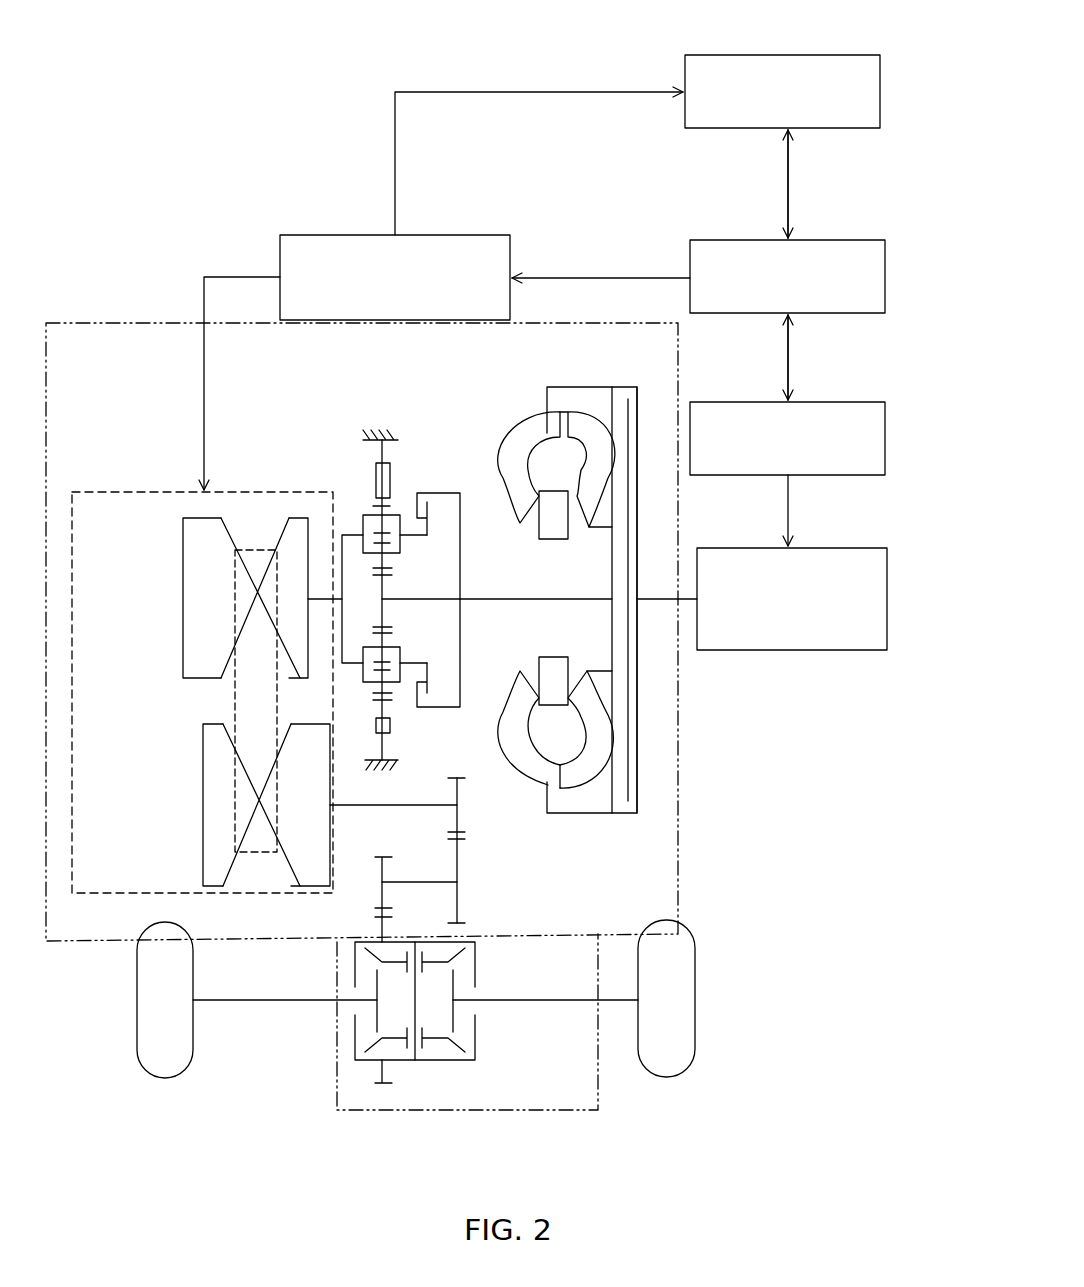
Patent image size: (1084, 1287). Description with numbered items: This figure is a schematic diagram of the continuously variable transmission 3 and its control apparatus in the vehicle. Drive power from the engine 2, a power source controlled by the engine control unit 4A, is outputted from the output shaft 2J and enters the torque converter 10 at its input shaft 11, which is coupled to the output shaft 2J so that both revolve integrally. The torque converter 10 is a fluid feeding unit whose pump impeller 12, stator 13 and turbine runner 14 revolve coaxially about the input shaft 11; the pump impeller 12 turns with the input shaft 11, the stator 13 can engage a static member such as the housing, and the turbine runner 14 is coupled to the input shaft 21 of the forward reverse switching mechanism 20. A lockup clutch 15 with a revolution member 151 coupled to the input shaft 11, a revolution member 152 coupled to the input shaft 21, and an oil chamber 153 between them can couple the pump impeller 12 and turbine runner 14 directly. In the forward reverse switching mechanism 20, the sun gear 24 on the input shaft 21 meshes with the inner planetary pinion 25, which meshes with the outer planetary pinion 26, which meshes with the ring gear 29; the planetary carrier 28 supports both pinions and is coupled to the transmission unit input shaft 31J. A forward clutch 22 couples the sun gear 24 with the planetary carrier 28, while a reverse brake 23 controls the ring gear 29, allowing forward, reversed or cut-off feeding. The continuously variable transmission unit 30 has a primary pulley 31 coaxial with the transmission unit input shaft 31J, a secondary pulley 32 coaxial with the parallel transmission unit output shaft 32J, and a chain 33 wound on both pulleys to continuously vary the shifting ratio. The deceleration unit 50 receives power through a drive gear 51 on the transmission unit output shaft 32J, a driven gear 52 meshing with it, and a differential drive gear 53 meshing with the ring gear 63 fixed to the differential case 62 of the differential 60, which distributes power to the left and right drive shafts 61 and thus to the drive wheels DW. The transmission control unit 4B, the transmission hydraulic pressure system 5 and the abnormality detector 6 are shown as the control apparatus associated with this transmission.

The engine 2 is at (867, 653).
The output shaft 2J is at (690, 598).
The continuously variable transmission 3 is at (512, 1112).
The engine control unit 4A is at (872, 402).
The transmission control unit 4B is at (872, 240).
The transmission hydraulic pressure system 5 is at (477, 235).
The abnormality detector 6 is at (867, 55).
The torque converter 10 is at (597, 632).
The input shaft 11 is at (656, 598).
The pump impeller 12 is at (512, 495).
The stator 13 is at (554, 665).
The turbine runner 14 is at (591, 525).
The lockup clutch 15 is at (652, 642).
The revolution member 151 is at (637, 692).
The revolution member 152 is at (625, 740).
The oil chamber 153 is at (631, 778).
The forward reverse switching mechanism 20 is at (353, 398).
The input shaft 21 is at (493, 604).
The forward clutch 22 is at (422, 481).
The reverse brake 23 is at (399, 730).
The sun gear 24 is at (392, 628).
The inner planetary pinion 25 is at (392, 571).
The outer planetary pinion 26 is at (378, 498).
The planetary carrier 28 is at (362, 662).
The ring gear 29 is at (373, 693).
The continuously variable transmission unit 30 is at (125, 490).
The primary pulley 31 is at (174, 579).
The transmission unit input shaft 31J is at (322, 599).
The secondary pulley 32 is at (186, 786).
The transmission unit output shaft 32J is at (345, 806).
The chain 33 is at (235, 702).
The deceleration unit 50 is at (475, 860).
The drive gear 51 is at (458, 792).
The driven gear 52 is at (457, 912).
The differential drive gear 53 is at (387, 866).
The differential 60 is at (463, 1021).
The drive shaft 61 is at (240, 1000).
The differential case 62 is at (477, 967).
The ring gear 63 is at (387, 922).
The drive wheel DW is at (163, 1078).